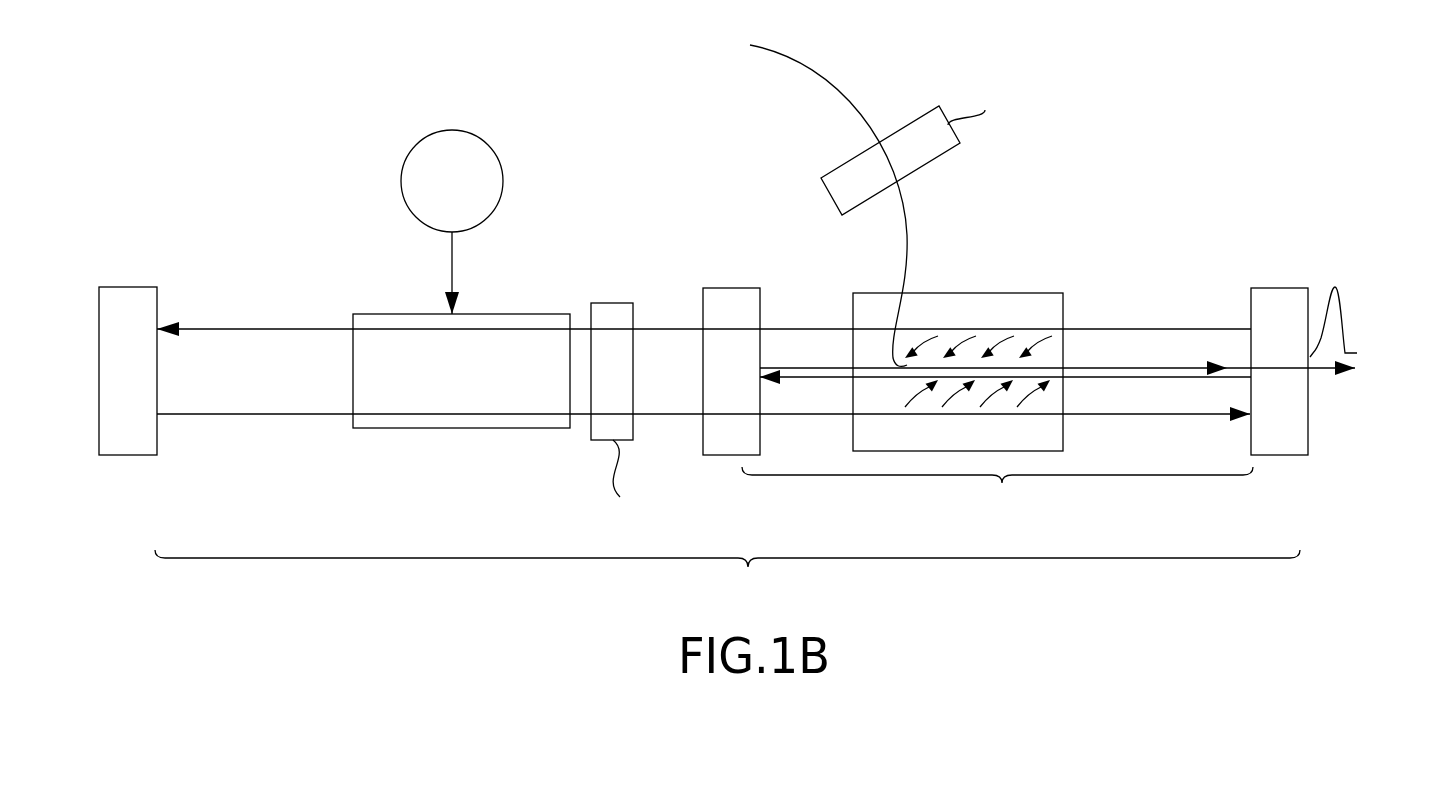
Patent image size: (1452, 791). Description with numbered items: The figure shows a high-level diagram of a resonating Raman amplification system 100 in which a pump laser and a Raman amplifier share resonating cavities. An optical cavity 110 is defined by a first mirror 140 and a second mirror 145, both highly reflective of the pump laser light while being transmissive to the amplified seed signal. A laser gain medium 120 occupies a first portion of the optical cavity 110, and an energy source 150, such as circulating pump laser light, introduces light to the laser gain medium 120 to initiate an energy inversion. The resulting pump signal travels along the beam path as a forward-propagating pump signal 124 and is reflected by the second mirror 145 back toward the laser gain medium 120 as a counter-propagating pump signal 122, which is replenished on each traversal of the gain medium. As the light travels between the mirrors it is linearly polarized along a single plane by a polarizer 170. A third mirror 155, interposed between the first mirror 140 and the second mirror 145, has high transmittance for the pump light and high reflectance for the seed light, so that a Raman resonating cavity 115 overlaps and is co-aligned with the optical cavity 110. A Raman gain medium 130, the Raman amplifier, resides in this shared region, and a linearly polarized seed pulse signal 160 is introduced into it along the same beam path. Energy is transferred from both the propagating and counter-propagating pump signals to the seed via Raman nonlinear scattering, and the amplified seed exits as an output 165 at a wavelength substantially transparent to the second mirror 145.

The resonating Raman amplification system 100 is at (338, 670).
The optical cavity 110 is at (727, 576).
The Raman resonating cavity 115 is at (997, 493).
The laser gain medium 120 is at (497, 314).
The counter-propagating pump signal 122 is at (245, 329).
The forward-propagating pump signal 124 is at (245, 414).
The Raman gain medium 130 is at (1063, 293).
The first mirror 140 is at (140, 287).
The second mirror 145 is at (1297, 288).
The energy source 150 is at (494, 150).
The third mirror 155 is at (728, 288).
The seed pulse signal 160 is at (917, 218).
The output 165 is at (1342, 307).
The polarizer 170 is at (613, 303).